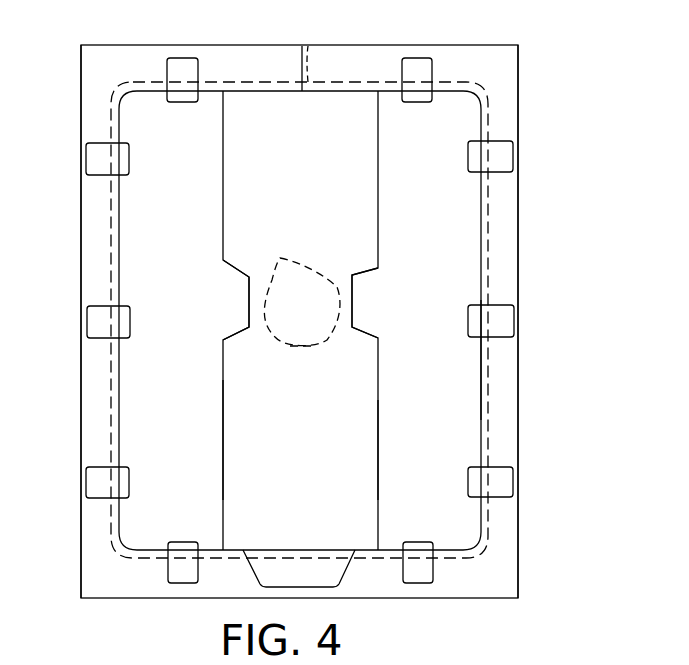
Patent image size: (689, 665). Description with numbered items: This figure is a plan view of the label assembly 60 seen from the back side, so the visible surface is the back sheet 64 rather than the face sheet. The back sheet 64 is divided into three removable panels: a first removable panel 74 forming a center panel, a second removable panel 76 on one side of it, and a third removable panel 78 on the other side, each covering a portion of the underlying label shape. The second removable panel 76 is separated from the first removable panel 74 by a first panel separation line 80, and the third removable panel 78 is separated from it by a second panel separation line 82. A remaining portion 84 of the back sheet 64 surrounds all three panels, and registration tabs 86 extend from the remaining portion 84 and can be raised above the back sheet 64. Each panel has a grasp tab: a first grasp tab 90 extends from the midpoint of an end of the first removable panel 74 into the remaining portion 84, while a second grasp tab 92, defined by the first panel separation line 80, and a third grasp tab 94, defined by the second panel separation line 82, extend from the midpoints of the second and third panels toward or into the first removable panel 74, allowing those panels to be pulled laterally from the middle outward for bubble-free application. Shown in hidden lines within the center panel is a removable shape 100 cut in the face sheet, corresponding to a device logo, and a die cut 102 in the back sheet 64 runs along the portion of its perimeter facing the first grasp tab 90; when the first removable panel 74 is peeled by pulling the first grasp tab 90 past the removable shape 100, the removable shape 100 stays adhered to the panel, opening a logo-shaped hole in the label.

The label assembly 60 is at (576, 140).
The back sheet 64 is at (503, 102).
The first removable panel 74 is at (350, 222).
The second removable panel 76 is at (137, 213).
The third removable panel 78 is at (463, 412).
The first panel separation line 80 is at (223, 443).
The second panel separation line 82 is at (378, 452).
The remaining portion 84 is at (512, 258).
The registration tabs 86 is at (178, 62).
The first grasp tab 90 is at (335, 573).
The second grasp tab 92 is at (235, 285).
The third grasp tab 94 is at (368, 323).
The removable shape 100 is at (295, 260).
The die cut 102 is at (298, 345).